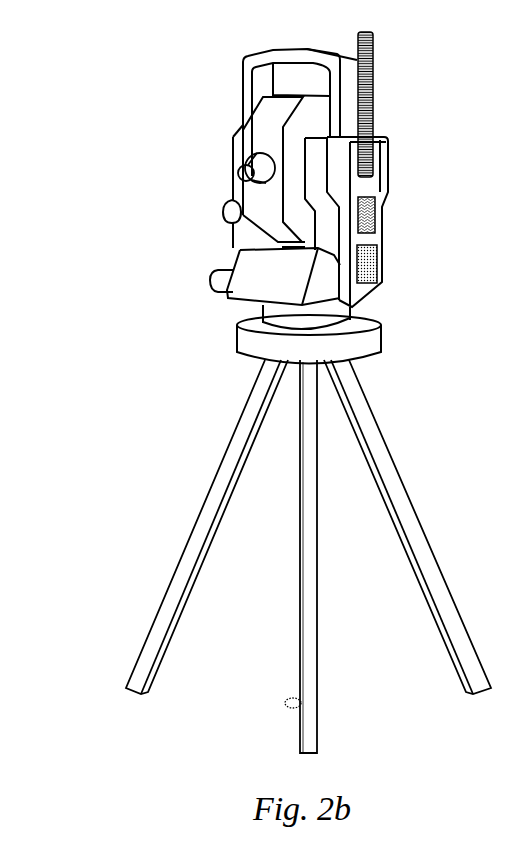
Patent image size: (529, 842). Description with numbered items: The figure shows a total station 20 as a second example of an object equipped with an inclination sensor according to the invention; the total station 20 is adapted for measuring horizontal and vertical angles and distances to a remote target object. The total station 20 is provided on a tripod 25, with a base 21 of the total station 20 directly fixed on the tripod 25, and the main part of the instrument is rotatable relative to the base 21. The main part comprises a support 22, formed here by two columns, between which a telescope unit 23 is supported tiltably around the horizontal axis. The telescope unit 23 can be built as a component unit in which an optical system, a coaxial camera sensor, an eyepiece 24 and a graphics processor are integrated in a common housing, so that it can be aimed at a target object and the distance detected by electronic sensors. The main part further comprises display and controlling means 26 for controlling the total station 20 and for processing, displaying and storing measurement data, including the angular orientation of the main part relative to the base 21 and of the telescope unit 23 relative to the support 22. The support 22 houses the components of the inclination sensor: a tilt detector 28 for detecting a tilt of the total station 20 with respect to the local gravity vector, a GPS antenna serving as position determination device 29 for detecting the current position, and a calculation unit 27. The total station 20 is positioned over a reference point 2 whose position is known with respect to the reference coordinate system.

The total station 20 is at (131, 223).
The base 21 is at (253, 352).
The support 22 is at (380, 157).
The telescope unit 23 is at (278, 107).
The eyepiece 24 is at (246, 173).
The tripod 25 is at (218, 498).
The display and controlling means 26 is at (248, 288).
The calculation unit 27 is at (370, 268).
The tilt detector 28 is at (370, 213).
The position determination device 29 is at (368, 85).
The reference point 2 is at (282, 711).